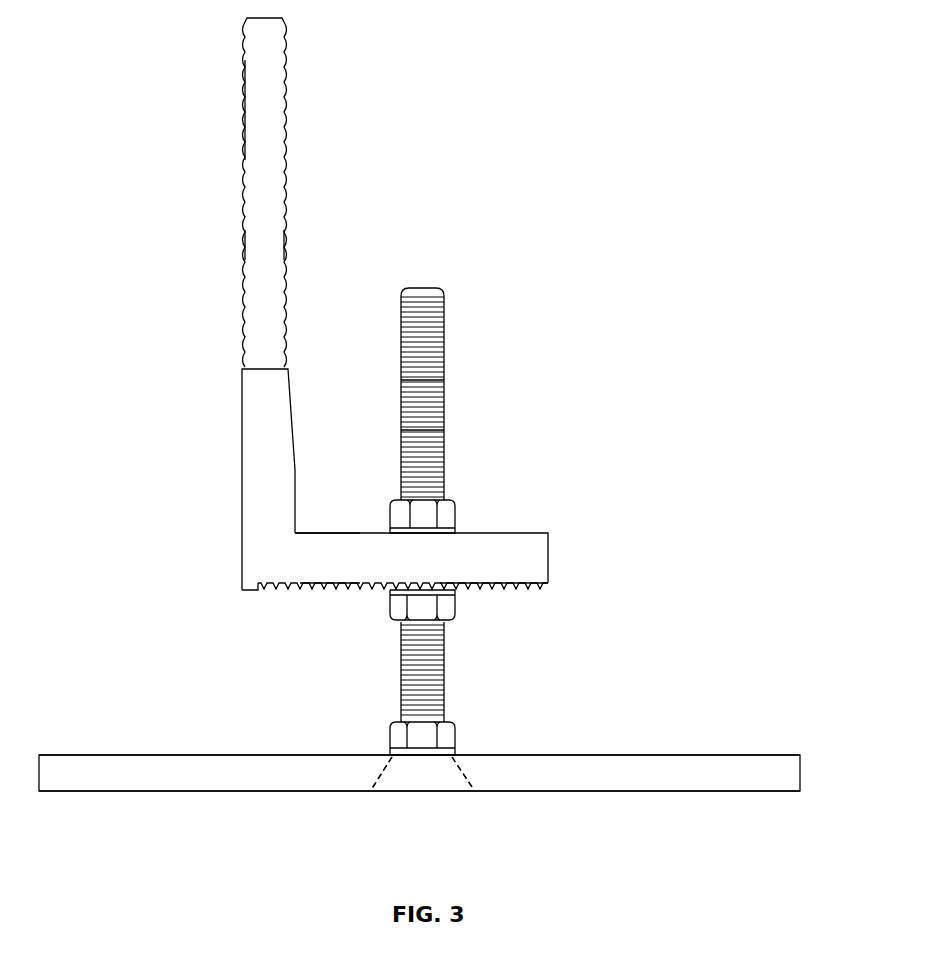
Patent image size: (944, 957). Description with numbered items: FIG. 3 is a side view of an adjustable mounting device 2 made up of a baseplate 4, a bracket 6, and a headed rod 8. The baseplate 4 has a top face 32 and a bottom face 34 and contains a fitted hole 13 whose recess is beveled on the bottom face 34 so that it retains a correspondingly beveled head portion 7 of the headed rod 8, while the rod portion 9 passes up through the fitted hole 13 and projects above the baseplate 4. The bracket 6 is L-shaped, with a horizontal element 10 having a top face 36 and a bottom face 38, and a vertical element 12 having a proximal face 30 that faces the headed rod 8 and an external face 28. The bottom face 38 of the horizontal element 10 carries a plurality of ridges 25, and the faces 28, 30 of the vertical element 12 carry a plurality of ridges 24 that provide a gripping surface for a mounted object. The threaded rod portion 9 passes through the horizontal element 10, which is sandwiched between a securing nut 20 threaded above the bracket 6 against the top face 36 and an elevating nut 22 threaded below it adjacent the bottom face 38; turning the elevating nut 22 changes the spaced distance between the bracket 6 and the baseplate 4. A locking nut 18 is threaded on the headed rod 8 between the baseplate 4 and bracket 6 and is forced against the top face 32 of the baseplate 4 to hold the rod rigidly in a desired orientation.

The adjustable mounting device 2 is at (548, 198).
The baseplate 4 is at (773, 774).
The bracket 6 is at (255, 421).
The head portion 7 is at (443, 793).
The headed rod 8 is at (440, 358).
The rod portion 9 is at (428, 408).
The horizontal element 10 is at (518, 555).
The vertical element 12 is at (258, 137).
The fitted hole 13 is at (404, 795).
The locking nut 18 is at (400, 740).
The securing nut 20 is at (436, 518).
The elevating nut 22 is at (437, 603).
The ridges 24 is at (245, 122).
The ridges 25 is at (470, 591).
The external face 28 is at (243, 243).
The proximal face 30 is at (287, 245).
The top face 32 is at (77, 751).
The bottom face 34 is at (78, 795).
The top face 36 is at (325, 531).
The bottom face 38 is at (330, 591).